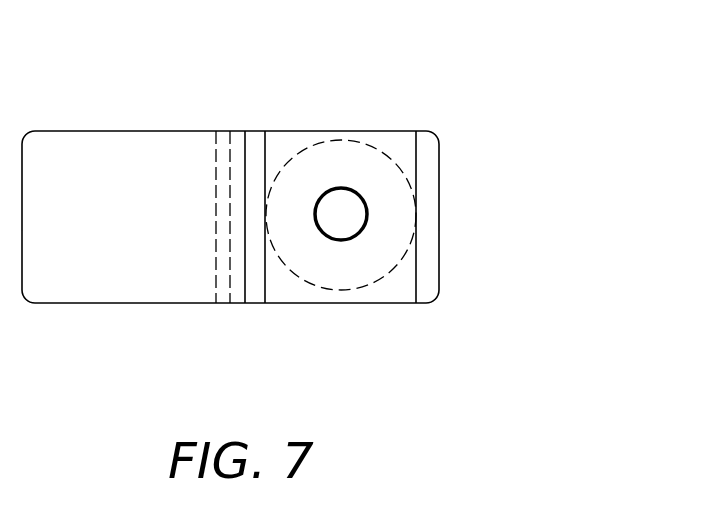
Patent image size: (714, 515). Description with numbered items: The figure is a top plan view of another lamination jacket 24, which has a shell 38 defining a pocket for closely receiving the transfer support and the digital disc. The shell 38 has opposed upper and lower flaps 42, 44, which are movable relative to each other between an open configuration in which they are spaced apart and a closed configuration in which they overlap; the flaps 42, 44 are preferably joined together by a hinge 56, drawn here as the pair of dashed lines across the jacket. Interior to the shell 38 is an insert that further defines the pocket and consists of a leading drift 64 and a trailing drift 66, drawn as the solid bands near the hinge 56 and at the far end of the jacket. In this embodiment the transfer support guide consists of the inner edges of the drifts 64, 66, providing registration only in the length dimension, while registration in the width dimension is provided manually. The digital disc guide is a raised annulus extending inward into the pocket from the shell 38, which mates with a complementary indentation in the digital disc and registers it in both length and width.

The lamination jacket 24 is at (111, 118).
The hinge 56 is at (240, 303).
The trailing drift or trailing edge section 66 is at (252, 130).
The leading drift or leading edge section 64 is at (433, 131).
The shell 38 is at (397, 143).
The upper flap 42 is at (148, 303).
The lower flap 44 is at (380, 303).